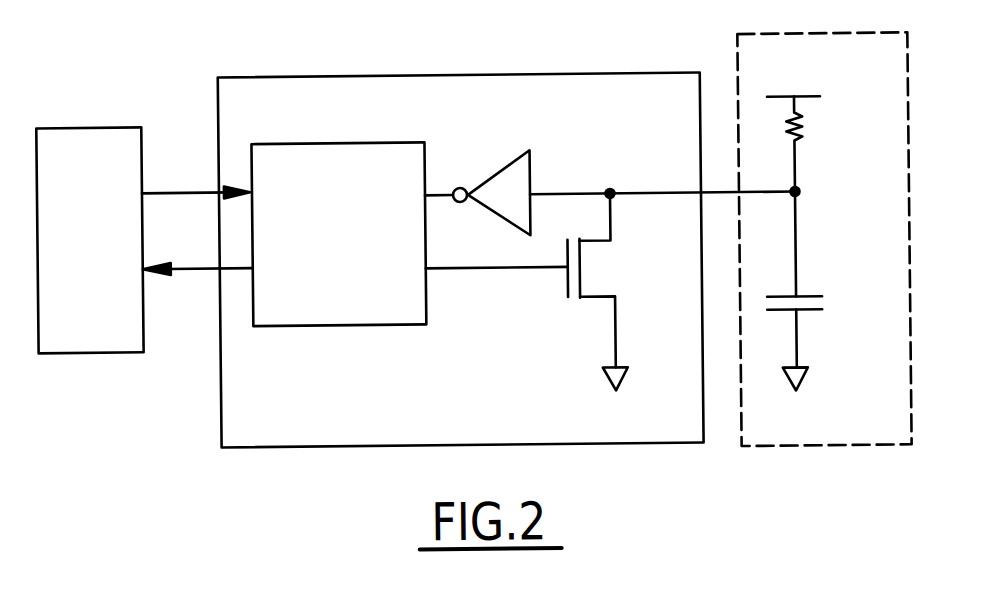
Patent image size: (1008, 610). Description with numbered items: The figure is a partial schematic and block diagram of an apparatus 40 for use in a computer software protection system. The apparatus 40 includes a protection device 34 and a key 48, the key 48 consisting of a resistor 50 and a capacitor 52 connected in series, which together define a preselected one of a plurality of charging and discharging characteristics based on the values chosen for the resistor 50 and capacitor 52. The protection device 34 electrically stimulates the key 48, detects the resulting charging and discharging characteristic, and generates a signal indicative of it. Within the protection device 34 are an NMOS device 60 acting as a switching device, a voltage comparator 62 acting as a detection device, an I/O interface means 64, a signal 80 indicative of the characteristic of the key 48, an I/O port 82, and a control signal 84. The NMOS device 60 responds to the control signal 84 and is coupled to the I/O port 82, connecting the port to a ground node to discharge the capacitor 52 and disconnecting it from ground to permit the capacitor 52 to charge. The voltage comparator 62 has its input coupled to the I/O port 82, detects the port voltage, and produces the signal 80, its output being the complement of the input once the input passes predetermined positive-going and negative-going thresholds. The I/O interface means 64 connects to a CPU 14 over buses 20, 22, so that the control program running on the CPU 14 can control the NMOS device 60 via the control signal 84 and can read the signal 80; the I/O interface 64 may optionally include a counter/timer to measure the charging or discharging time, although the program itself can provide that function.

The CPU 14 is at (78, 123).
The bus 20 is at (170, 189).
The bus 22 is at (182, 264).
The protection device 34 is at (427, 73).
The apparatus 40 is at (591, 47).
The key 48 is at (845, 20).
The resistor 50 is at (810, 128).
The capacitor 52 is at (823, 305).
The NMOS device 60 is at (586, 271).
The voltage comparator 62 is at (532, 162).
The I/O interface means 64 is at (337, 141).
The signal indicative of the preselected charging and discharging characteristic 80 is at (440, 191).
The I/O port 82 is at (660, 192).
The control signal 84 is at (520, 270).